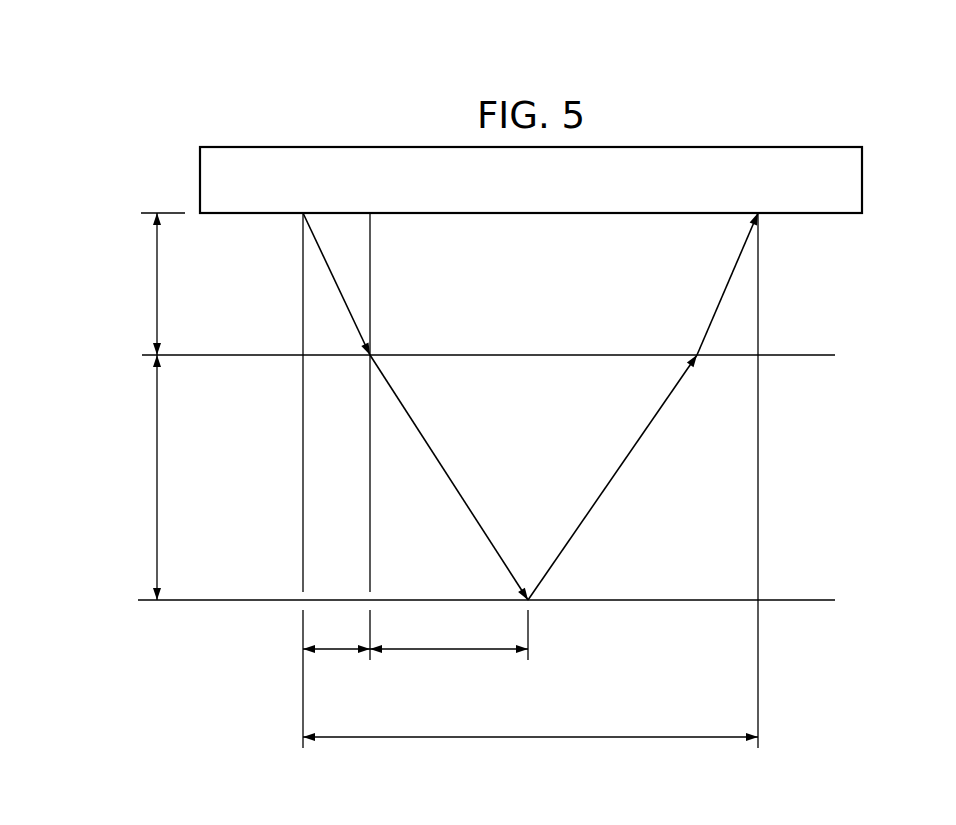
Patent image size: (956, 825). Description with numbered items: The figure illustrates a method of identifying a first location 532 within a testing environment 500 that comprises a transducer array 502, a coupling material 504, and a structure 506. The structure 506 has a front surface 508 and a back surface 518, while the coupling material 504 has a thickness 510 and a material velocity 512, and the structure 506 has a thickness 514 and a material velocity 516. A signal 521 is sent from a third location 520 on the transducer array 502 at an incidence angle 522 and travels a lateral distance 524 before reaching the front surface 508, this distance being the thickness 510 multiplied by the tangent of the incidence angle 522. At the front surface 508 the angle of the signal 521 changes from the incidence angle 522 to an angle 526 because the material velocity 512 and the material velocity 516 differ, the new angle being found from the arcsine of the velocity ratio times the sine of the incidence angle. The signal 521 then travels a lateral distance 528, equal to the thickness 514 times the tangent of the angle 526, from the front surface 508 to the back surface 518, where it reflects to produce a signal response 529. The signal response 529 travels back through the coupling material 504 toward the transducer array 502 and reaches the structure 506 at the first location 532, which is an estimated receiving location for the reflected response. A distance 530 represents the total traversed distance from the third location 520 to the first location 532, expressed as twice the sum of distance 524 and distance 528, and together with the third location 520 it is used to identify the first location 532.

The testing environment 500 is at (186, 53).
The transducer array 502 is at (334, 128).
The coupling material 504 is at (124, 235).
The structure 506 is at (124, 407).
The front surface 508 is at (150, 352).
The thickness 510 is at (157, 285).
The material velocity 512 is at (552, 297).
The thickness 514 is at (156, 494).
The material velocity 516 is at (552, 428).
The back surface 518 is at (142, 600).
The third location 520 is at (293, 178).
The signal 521 is at (347, 300).
The incidence angle 522 is at (320, 293).
The distance 524 is at (337, 653).
The angle 526 is at (393, 432).
The distance 528 is at (448, 653).
The signal response 529 is at (563, 507).
The distance 530 is at (538, 740).
The first location 532 is at (770, 178).